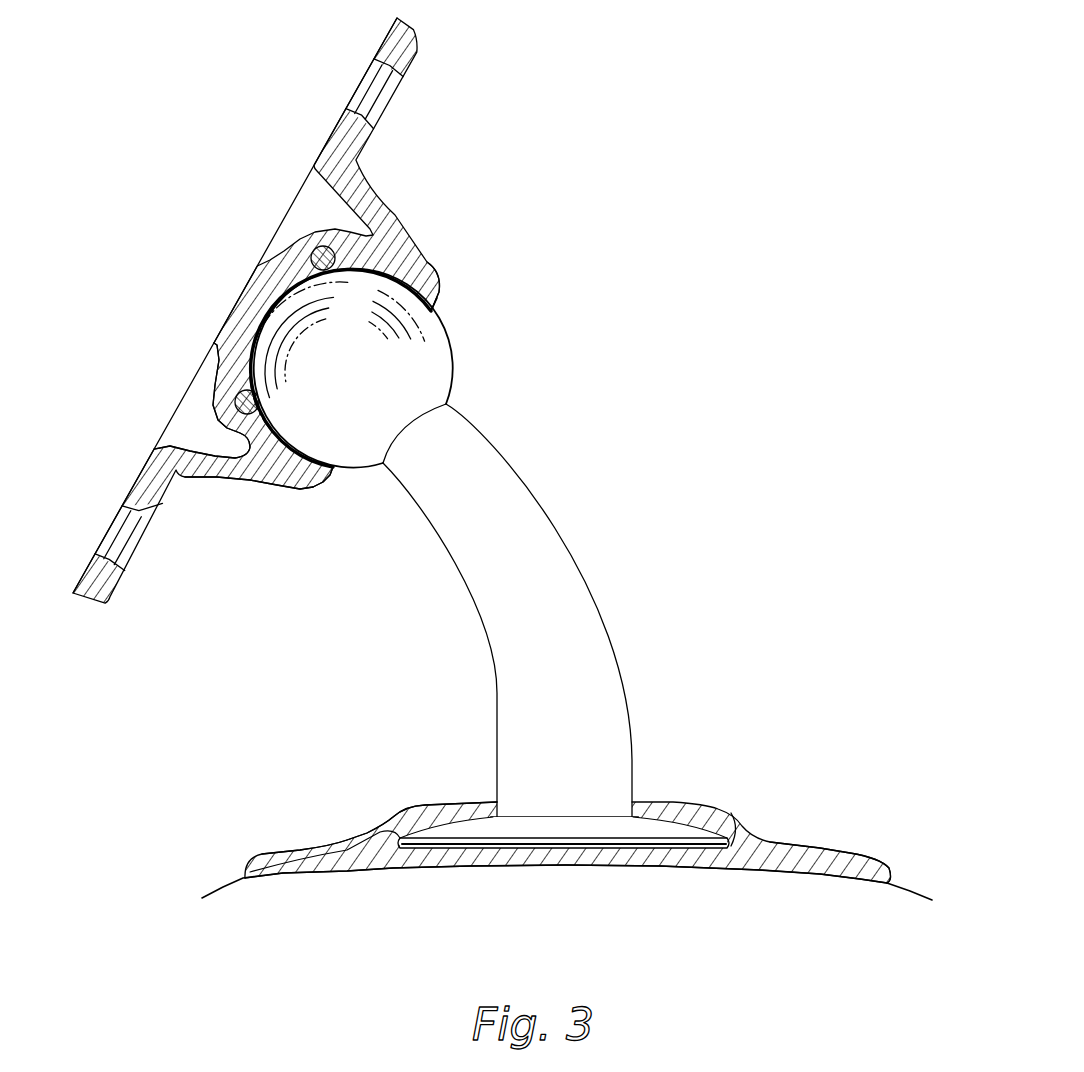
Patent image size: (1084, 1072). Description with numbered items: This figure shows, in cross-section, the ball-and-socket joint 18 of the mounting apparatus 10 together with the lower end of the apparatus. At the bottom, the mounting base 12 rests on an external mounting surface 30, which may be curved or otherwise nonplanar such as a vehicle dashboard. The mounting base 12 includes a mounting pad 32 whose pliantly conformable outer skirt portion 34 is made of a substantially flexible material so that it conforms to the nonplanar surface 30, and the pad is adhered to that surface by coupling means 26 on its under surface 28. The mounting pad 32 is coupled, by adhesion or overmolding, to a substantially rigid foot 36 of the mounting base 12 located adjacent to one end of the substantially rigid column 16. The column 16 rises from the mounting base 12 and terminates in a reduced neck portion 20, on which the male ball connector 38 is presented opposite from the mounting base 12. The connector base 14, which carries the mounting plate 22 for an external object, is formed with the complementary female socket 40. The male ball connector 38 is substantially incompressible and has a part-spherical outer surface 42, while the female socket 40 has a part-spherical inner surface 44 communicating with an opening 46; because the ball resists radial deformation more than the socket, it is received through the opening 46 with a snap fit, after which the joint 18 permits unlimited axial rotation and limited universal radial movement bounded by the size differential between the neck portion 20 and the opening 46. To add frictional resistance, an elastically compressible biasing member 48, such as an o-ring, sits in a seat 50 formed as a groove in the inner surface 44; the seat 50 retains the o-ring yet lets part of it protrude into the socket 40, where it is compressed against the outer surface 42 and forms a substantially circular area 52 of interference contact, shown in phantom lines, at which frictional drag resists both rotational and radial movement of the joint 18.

The mounting apparatus 10 is at (616, 408).
The mounting base 12 is at (700, 803).
The connector base 14 is at (390, 208).
The column 16 is at (563, 537).
The ball-and-socket joint 18 is at (452, 352).
The reduced neck portion 20 is at (463, 430).
The mounting plate 22 is at (327, 143).
The coupling means 26 is at (333, 873).
The under surface 28 is at (563, 867).
The mounting surface 30 is at (225, 888).
The mounting pad 32 is at (443, 802).
The outer skirt portion 34 is at (820, 847).
The foot 36 is at (730, 817).
The male ball connector 38 is at (369, 381).
The female socket 40 is at (293, 493).
The part-spherical outer surface 42 is at (440, 307).
The part-spherical inner surface 44 is at (420, 268).
The opening 46 is at (333, 472).
The biasing member 48 is at (309, 250).
The seat 50 is at (227, 428).
The circular area 52 is at (305, 316).